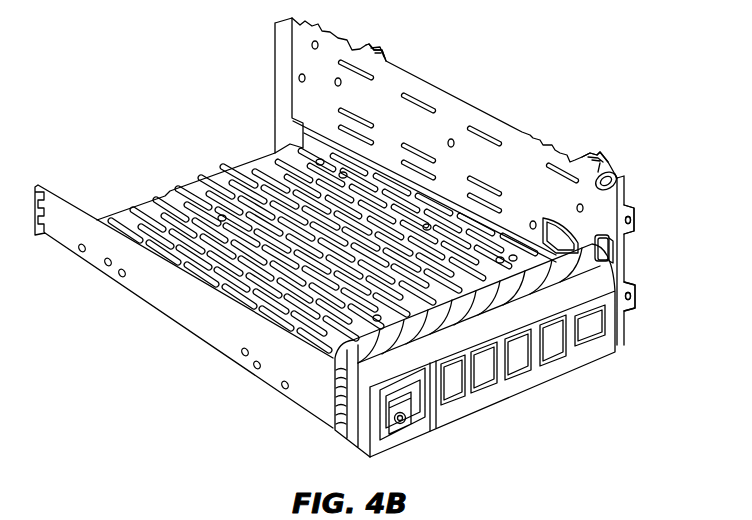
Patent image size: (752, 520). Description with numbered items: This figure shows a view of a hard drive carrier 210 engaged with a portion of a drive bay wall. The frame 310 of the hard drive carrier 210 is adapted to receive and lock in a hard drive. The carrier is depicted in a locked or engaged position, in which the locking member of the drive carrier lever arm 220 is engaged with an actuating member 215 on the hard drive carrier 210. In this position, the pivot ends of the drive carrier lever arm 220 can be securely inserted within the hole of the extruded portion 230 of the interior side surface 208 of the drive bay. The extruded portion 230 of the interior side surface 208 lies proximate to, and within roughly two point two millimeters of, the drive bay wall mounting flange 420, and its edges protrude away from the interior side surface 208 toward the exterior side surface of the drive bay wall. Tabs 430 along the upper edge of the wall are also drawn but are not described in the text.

The side wall 208 is at (437, 88).
The end cap 210 is at (363, 430).
The indicator window 215 is at (410, 418).
The front bezel 220 is at (536, 372).
The latch tabs 230 is at (618, 180).
The perforated base 310 is at (203, 194).
The mounting tabs 420 is at (638, 212).
The retention tabs 430 is at (380, 48).